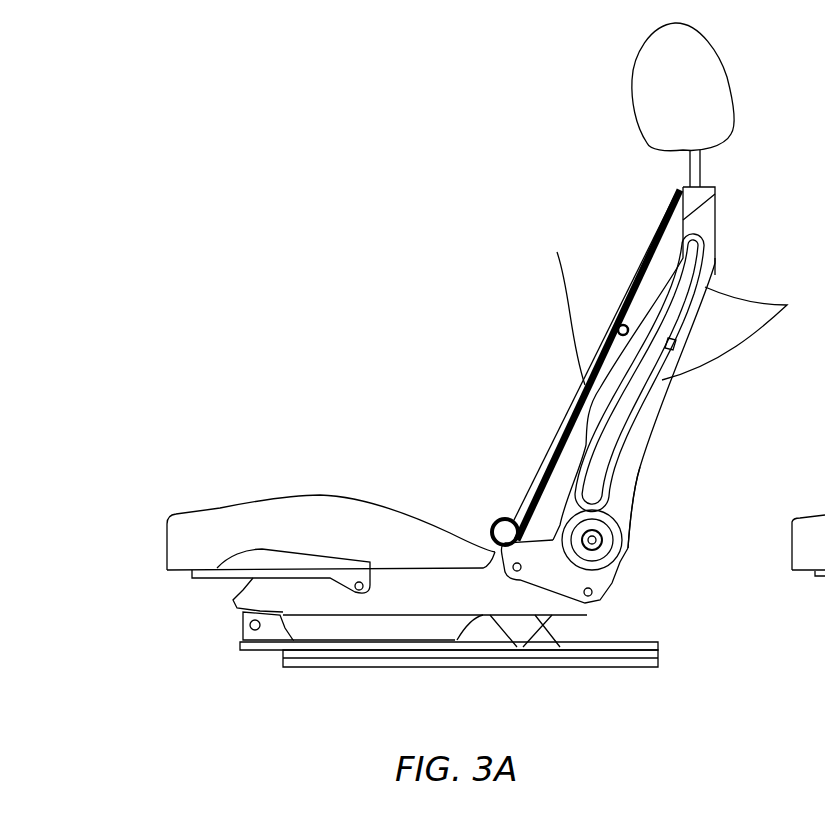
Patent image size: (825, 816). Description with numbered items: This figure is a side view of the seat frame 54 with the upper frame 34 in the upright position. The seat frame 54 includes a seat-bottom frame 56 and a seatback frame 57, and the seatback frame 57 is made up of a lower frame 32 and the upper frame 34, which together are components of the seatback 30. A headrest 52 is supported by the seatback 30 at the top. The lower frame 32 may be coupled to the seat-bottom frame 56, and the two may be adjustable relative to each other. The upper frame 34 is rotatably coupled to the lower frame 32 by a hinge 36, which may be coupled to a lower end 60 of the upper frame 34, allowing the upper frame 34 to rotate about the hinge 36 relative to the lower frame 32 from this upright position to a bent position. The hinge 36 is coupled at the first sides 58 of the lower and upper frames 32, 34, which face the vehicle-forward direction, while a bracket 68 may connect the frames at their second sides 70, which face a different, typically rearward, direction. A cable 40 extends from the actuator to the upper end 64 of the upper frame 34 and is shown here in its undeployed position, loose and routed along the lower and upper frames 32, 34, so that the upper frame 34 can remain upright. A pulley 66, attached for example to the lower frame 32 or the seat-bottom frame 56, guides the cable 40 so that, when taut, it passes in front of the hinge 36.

The seatback 30 is at (708, 395).
The lower frame 32 is at (635, 492).
The upper frame 34 is at (714, 258).
The hinge 36 is at (618, 326).
The cable 40 is at (540, 497).
The headrest 52 is at (713, 50).
The seat frame 54 is at (322, 330).
The seat-bottom frame 56 is at (220, 508).
The seatback frame 57 is at (662, 423).
The first sides 58 is at (652, 296).
The lower end 60 is at (660, 318).
The upper end 64 is at (699, 225).
The pulley 66 is at (503, 519).
The bracket 68 is at (673, 345).
The second sides 70 is at (741, 333).